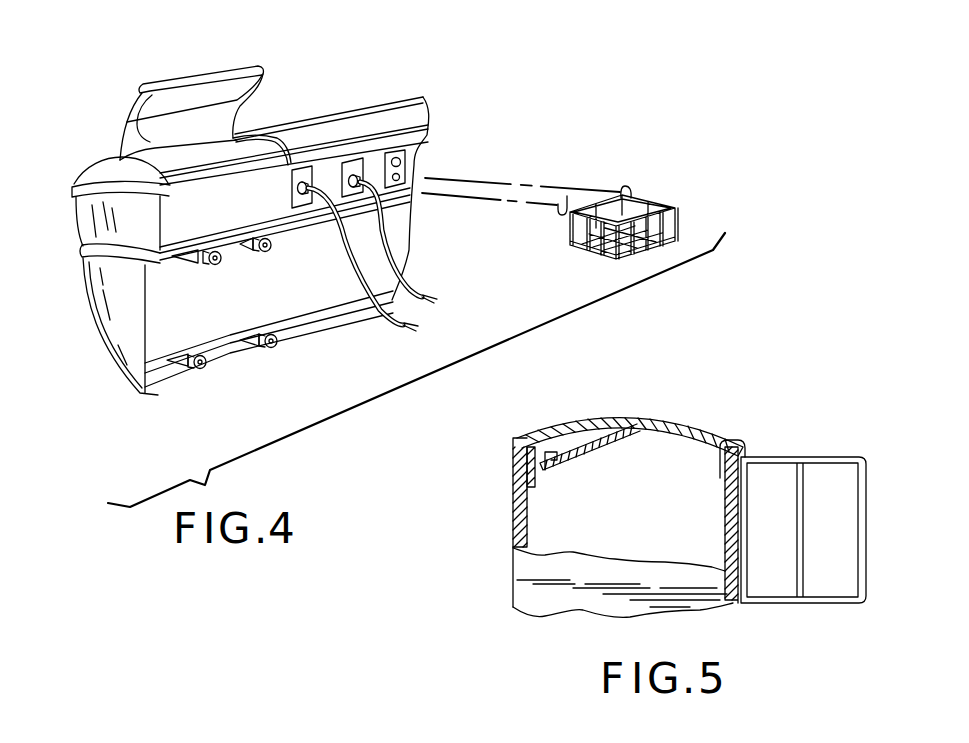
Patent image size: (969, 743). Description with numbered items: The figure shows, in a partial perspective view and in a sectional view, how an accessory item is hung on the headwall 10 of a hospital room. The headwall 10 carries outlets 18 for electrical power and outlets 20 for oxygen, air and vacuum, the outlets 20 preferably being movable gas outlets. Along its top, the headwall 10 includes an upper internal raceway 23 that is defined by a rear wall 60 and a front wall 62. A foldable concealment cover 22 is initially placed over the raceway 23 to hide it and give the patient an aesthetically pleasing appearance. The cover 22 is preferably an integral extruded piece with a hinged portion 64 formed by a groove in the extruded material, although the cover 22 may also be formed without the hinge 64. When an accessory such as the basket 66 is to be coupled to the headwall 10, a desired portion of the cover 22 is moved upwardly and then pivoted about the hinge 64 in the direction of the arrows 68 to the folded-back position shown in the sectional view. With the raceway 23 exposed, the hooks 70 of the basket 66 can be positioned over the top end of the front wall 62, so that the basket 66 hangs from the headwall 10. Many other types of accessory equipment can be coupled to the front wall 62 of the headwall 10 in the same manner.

In FIG. 4, the headwall 10 is at (57, 157).
In FIG. 5, the headwall 10 is at (501, 453).
In FIG. 4, the outlets for electrical power 18 is at (310, 178).
In FIG. 4, the outlets for oxygen, air, and vacuum 20 is at (268, 347).
In FIG. 4, the foldable concealment cover 22 is at (206, 60).
In FIG. 5, the foldable concealment cover 22 is at (690, 424).
In FIG. 5, the internal raceway 23 is at (588, 531).
In FIG. 5, the rear wall 60 is at (518, 508).
In FIG. 5, the front wall 62 is at (733, 512).
In FIG. 5, the hinged portion 64 is at (638, 420).
In FIG. 4, the basket 66 is at (682, 193).
In FIG. 5, the basket 66 is at (861, 448).
In FIG. 4, the arrows 68 is at (132, 141).
In FIG. 4, the hooks 70 is at (567, 196).
In FIG. 5, the hooks 70 is at (731, 441).